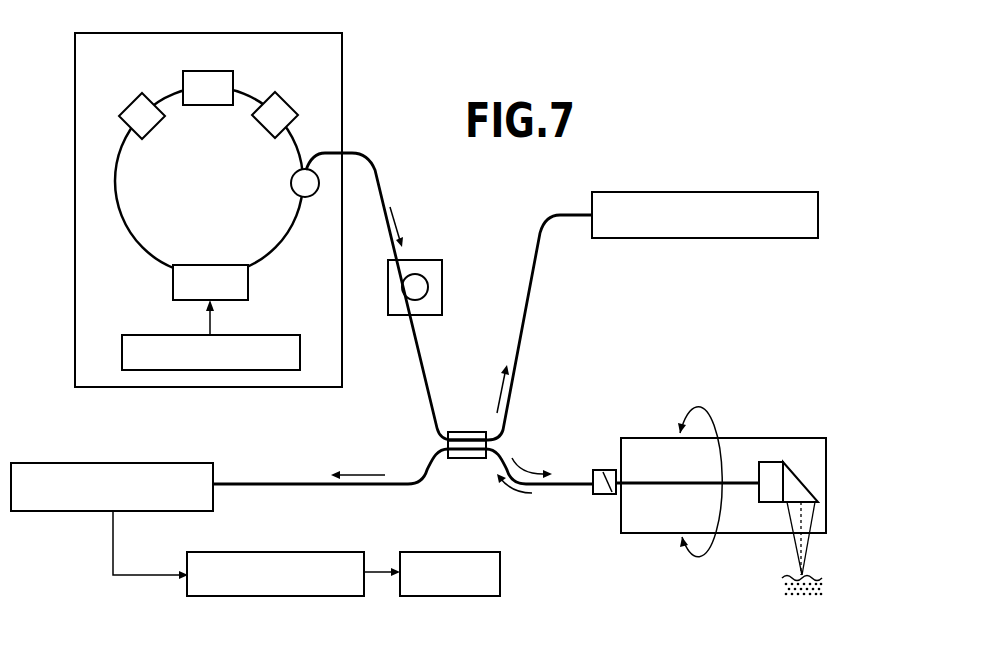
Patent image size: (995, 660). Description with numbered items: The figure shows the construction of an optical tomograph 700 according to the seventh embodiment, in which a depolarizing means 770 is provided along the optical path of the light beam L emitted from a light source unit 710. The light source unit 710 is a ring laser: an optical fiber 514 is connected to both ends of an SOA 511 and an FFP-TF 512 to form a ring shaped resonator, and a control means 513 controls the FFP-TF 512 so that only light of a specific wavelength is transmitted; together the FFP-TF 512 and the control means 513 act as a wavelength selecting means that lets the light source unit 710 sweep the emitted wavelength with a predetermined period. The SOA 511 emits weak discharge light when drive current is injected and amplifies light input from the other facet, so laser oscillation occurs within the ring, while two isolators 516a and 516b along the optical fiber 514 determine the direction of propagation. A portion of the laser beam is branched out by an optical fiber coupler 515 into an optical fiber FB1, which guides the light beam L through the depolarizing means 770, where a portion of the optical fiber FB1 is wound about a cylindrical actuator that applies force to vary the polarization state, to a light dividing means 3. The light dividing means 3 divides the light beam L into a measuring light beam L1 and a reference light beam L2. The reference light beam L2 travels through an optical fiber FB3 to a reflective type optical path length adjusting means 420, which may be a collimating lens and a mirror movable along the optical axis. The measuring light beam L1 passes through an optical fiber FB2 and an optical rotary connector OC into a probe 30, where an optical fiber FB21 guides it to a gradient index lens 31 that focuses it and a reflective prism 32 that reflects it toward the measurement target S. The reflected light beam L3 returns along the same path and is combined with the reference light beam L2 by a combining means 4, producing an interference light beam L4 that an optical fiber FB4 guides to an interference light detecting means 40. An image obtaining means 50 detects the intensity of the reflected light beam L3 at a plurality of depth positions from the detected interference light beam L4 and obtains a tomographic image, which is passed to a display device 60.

The optical tomograph 700 is at (690, 87).
The light source unit 710 is at (342, 70).
The SOA 511 is at (222, 70).
The FFP-TF 512 is at (233, 265).
The control means 513 is at (284, 334).
The optical fiber 514 is at (128, 247).
The optical fiber coupler 515 is at (312, 198).
The isolator 516a is at (142, 99).
The isolator 516b is at (286, 103).
The depolarizing means 770 is at (442, 268).
The light dividing means 3 is at (462, 464).
The combining means 4 is at (460, 458).
The optical path length adjusting means 420 is at (804, 192).
The probe 30 is at (826, 458).
The gradient index lens 31 is at (771, 462).
The reflective prism 32 is at (811, 490).
The interference light detecting means 40 is at (82, 512).
The image obtaining means 50 is at (202, 552).
The display device 60 is at (415, 552).
The optical fiber FB1 is at (422, 387).
The optical fiber FB2 is at (557, 483).
The optical fiber FB3 is at (513, 385).
The optical fiber FB4 is at (287, 482).
The optical fiber FB21 is at (687, 473).
The optical rotary connector OC is at (606, 470).
The light beam L is at (399, 227).
The measuring light beam L1 is at (532, 463).
The reference light beam L2 is at (493, 389).
The reflected light beam L3 is at (510, 491).
The interference light beam L4 is at (358, 466).
The measurement target S is at (820, 576).